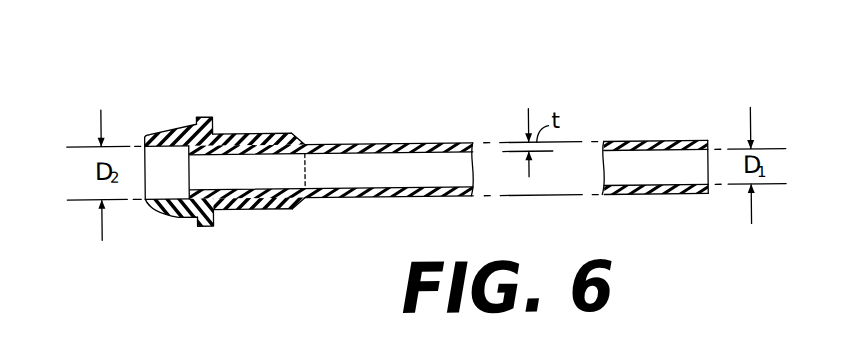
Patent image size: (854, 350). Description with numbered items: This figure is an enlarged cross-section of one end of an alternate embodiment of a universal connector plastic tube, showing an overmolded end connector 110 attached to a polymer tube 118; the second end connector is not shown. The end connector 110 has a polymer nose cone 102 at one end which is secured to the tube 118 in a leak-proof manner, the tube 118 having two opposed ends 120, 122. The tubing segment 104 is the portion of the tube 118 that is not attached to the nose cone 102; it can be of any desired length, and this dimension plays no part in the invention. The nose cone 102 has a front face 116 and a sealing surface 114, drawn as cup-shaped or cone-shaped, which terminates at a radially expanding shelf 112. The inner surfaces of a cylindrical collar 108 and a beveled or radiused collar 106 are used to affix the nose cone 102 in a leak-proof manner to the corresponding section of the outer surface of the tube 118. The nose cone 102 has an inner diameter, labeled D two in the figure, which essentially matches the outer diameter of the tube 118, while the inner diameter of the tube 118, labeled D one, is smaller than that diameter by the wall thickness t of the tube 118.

The polymer nose cone 102 is at (164, 122).
The tubing segment 104 is at (666, 133).
The beveled or radiused collar 106 is at (293, 209).
The cylindrical collar 108 is at (255, 210).
The overmolded end connector 110 is at (246, 57).
The radially expanding shelf 112 is at (209, 118).
The sealing surface 114 is at (186, 219).
The front face 116 is at (142, 201).
The polymer tube 118 is at (446, 146).
The end of tube 120 is at (709, 199).
The end of tube 122 is at (178, 200).